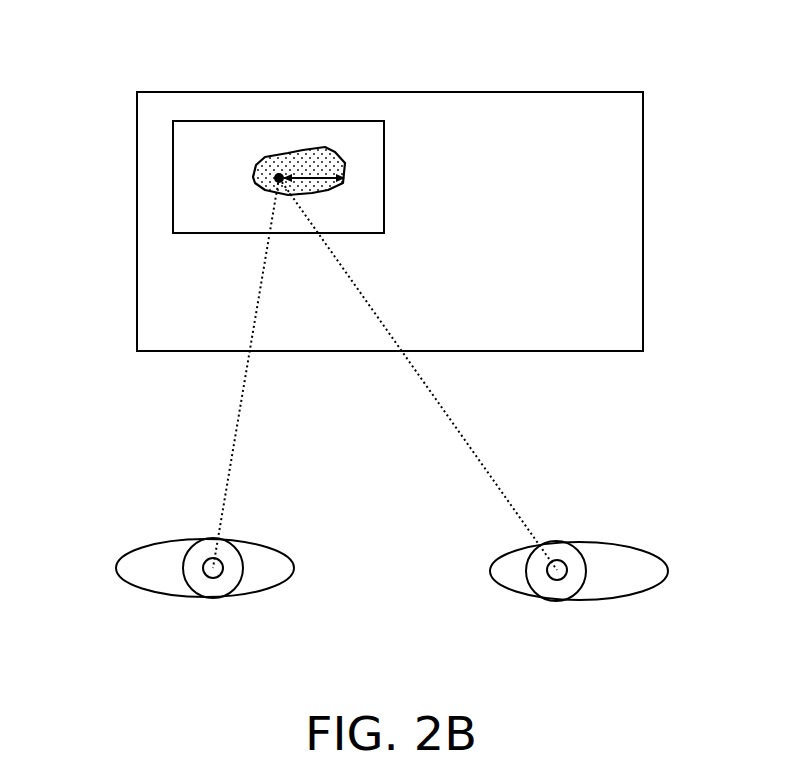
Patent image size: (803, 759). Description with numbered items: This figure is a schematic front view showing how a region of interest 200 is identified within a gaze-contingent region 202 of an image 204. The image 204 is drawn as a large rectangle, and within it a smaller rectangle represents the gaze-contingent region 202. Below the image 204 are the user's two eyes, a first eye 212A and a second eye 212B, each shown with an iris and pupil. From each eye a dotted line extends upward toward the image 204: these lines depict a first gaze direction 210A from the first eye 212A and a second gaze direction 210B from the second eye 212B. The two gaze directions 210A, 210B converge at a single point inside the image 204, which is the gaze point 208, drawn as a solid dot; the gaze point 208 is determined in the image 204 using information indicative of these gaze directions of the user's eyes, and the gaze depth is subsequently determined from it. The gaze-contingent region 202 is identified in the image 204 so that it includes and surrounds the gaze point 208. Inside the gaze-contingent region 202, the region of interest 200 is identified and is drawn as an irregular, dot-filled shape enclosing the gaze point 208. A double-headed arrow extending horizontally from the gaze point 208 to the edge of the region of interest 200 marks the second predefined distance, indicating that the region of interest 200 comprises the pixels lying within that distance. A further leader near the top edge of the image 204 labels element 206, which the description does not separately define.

The region of interest 200 is at (304, 108).
The gaze-contingent region 202 is at (245, 127).
The image 204 is at (399, 187).
The display surface 206 is at (390, 64).
The gaze point 208 is at (159, 162).
The first gaze direction 210A is at (428, 374).
The second gaze direction 210B is at (216, 373).
The first eye 212A is at (611, 543).
The second eye 212B is at (252, 544).